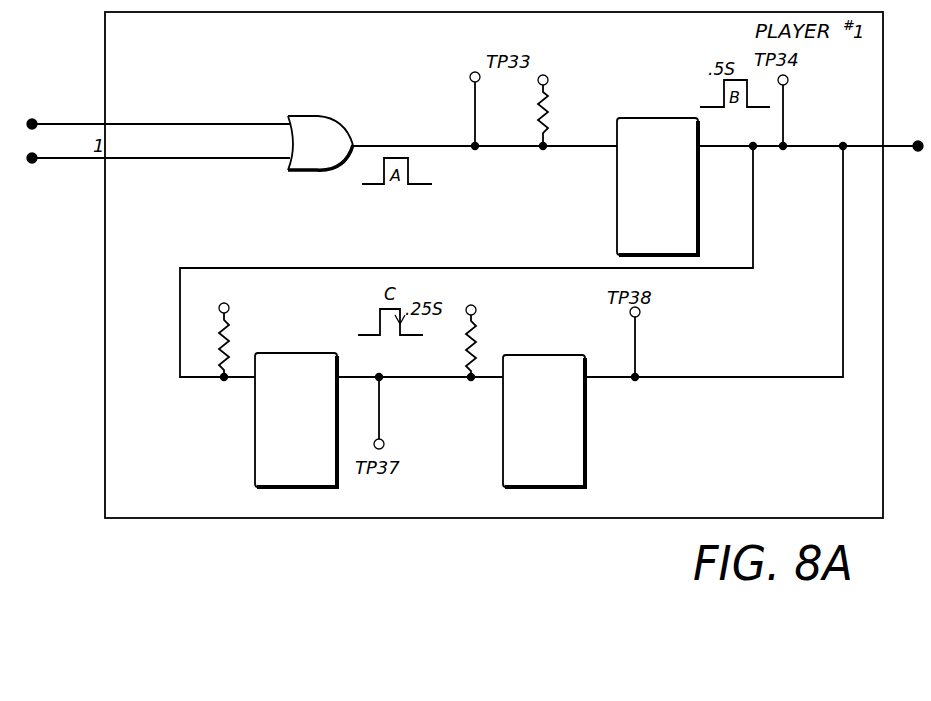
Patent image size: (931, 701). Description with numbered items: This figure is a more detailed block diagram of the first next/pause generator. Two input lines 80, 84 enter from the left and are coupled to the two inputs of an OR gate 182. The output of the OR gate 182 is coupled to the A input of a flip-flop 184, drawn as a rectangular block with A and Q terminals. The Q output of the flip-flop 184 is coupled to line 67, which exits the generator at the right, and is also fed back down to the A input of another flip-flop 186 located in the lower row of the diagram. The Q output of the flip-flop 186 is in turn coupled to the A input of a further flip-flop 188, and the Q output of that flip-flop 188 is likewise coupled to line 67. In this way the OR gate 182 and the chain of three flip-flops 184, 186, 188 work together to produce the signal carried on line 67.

The line 80 is at (160, 160).
The line 84 is at (232, 121).
The OR gate 182 is at (342, 172).
The flip-flop 184 is at (617, 172).
The flip-flop 186 is at (255, 452).
The flip-flop 188 is at (503, 450).
The line 67 is at (853, 146).